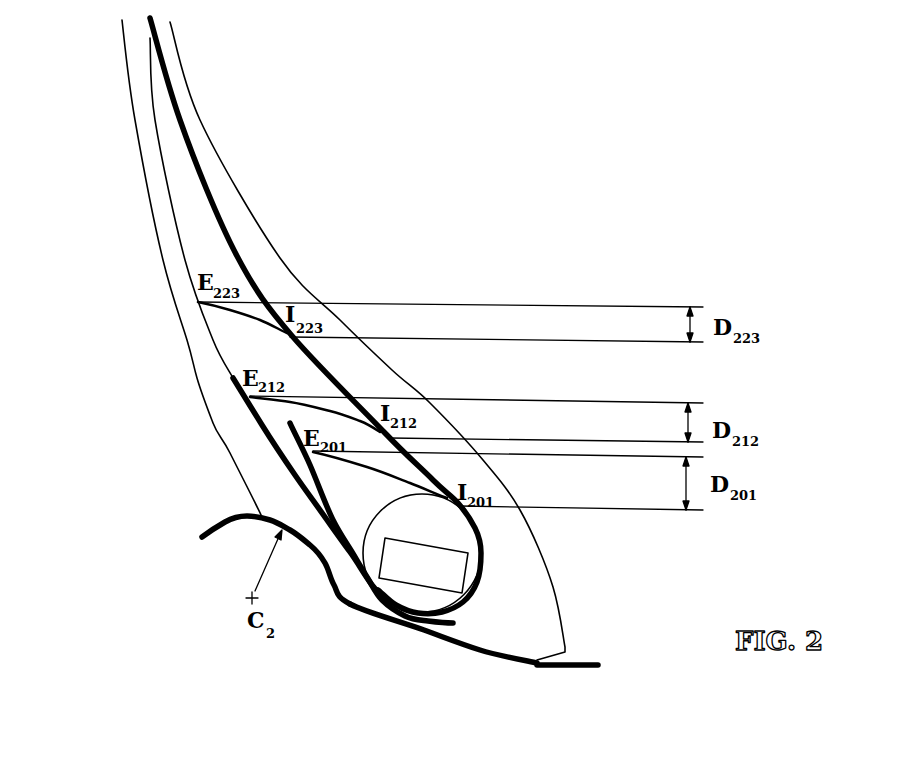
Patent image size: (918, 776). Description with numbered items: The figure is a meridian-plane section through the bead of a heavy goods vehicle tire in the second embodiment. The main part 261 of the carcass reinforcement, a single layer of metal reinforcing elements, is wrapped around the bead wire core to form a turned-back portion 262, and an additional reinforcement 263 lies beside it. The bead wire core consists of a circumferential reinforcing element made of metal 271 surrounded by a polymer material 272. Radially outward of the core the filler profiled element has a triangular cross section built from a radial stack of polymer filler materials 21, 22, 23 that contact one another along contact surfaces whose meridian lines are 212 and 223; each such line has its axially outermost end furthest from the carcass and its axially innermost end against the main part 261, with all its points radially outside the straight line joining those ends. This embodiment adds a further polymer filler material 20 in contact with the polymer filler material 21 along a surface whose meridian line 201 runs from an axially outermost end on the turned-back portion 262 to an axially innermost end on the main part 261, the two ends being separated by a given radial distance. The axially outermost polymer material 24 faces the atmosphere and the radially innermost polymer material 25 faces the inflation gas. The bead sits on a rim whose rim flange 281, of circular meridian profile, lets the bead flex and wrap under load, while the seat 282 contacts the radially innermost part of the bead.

The additional polymer filler material 20 is at (362, 500).
The polymer filler material 21 is at (340, 423).
The polymer filler material 22 is at (280, 367).
The polymer filler material 23 is at (203, 250).
The polymer material 24 is at (157, 185).
The polymer material 25 is at (193, 125).
The meridian line 201 is at (362, 463).
The meridian line 212 is at (302, 392).
The meridian line 223 is at (238, 302).
The main part of the carcass reinforcement 261 is at (202, 175).
The turned-back portion 262 is at (300, 468).
The additional reinforcement 263 is at (257, 422).
The circumferential reinforcing element made of metal 271 is at (423, 570).
The polymer material 272 is at (410, 520).
The rim flange 281 is at (217, 523).
The seat 282 is at (447, 640).